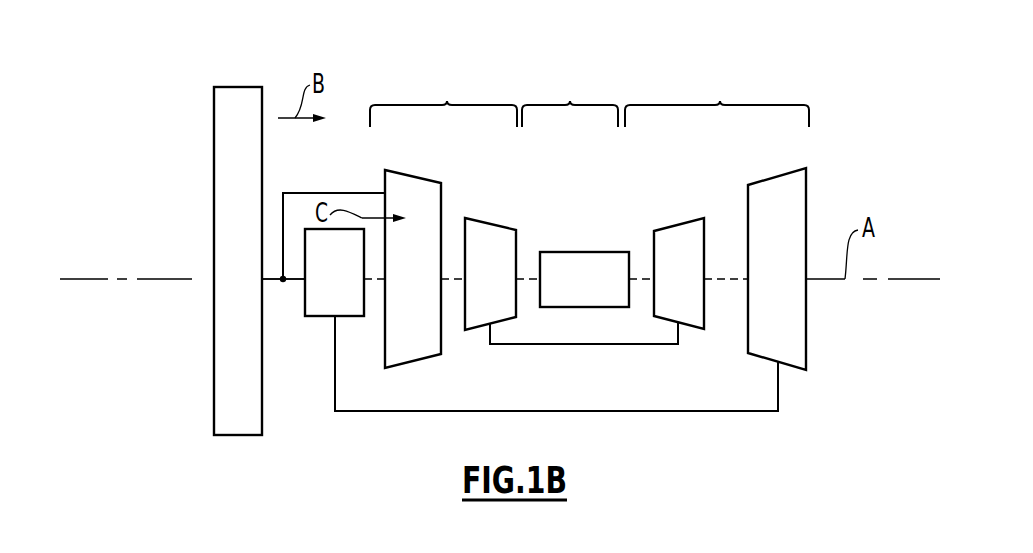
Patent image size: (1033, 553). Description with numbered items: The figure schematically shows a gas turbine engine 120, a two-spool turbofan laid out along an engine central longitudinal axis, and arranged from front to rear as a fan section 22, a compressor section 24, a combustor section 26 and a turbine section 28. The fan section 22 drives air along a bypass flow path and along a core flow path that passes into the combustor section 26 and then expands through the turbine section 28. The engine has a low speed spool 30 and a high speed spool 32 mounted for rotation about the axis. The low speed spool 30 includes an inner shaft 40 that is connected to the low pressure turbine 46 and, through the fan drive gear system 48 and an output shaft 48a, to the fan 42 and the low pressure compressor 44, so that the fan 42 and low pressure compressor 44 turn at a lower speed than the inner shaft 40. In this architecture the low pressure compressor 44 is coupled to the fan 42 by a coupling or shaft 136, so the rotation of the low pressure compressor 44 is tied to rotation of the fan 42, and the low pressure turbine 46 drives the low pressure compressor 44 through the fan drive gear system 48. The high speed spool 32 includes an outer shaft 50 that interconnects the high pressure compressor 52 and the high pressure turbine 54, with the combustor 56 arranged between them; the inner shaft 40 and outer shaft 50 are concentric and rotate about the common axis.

The gas turbine engine 120 is at (118, 420).
The fan section 22 is at (225, 57).
The fan 42 is at (264, 98).
The shaft 136 is at (345, 193).
The fan drive gear system 48 is at (345, 316).
The output shaft 48a is at (285, 283).
The low pressure compressor 44 is at (403, 147).
The compressor section 24 is at (447, 101).
The combustor section 26 is at (570, 101).
The turbine section 28 is at (720, 101).
The high pressure compressor 52 is at (490, 224).
The combustor 56 is at (565, 252).
The high pressure turbine 54 is at (663, 229).
The low pressure turbine 46 is at (762, 183).
The outer shaft 50 is at (555, 344).
The high speed spool 32 is at (660, 357).
The inner shaft 40 is at (568, 411).
The low speed spool 30 is at (740, 425).